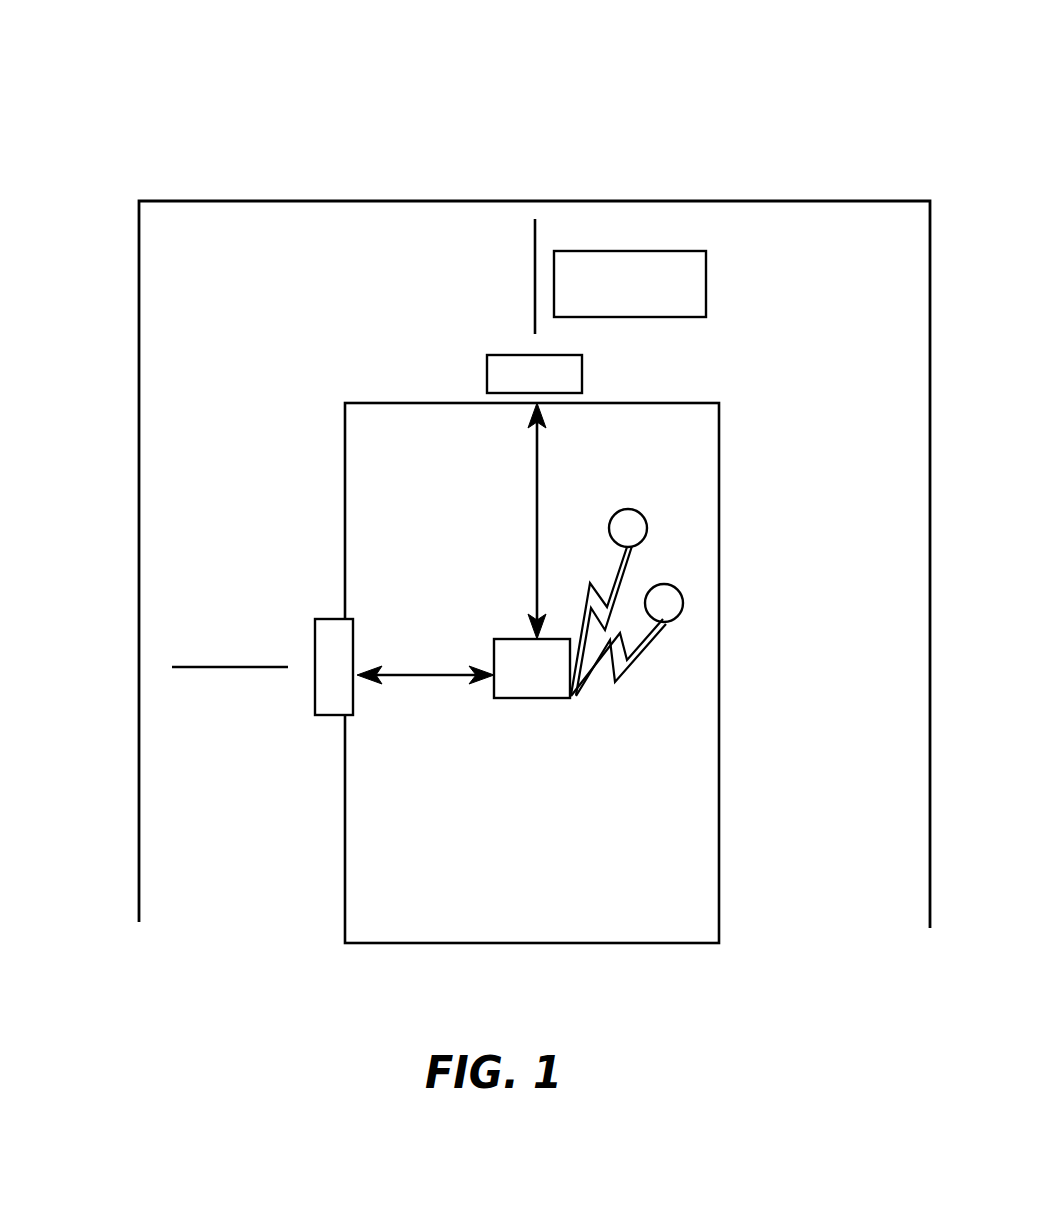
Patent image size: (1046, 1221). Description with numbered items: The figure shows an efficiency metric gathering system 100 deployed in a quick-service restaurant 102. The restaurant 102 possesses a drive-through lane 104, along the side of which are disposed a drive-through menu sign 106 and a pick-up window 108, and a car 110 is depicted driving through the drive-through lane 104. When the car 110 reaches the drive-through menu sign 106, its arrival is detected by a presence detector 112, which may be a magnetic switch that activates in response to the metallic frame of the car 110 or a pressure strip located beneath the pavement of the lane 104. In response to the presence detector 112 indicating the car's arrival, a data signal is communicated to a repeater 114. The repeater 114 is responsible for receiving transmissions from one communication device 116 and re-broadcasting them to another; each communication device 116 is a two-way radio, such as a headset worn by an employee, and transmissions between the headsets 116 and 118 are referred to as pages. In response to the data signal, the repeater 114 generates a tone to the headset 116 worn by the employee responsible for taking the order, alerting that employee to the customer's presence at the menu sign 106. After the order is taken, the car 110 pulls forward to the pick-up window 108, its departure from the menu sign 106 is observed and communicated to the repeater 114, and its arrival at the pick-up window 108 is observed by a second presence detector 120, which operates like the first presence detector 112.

The efficiency metric gathering system 100 is at (356, 92).
The quick-service restaurant 102 is at (428, 916).
The drive-through lane 104 is at (850, 801).
The drive-through menu sign 106 is at (554, 388).
The pick-up window 108 is at (330, 716).
The car 110 is at (651, 294).
The presence detector 112 is at (531, 264).
The repeater 114 is at (553, 686).
The communication device 116 is at (673, 620).
The headset 118 is at (628, 509).
The second presence detector 120 is at (220, 667).